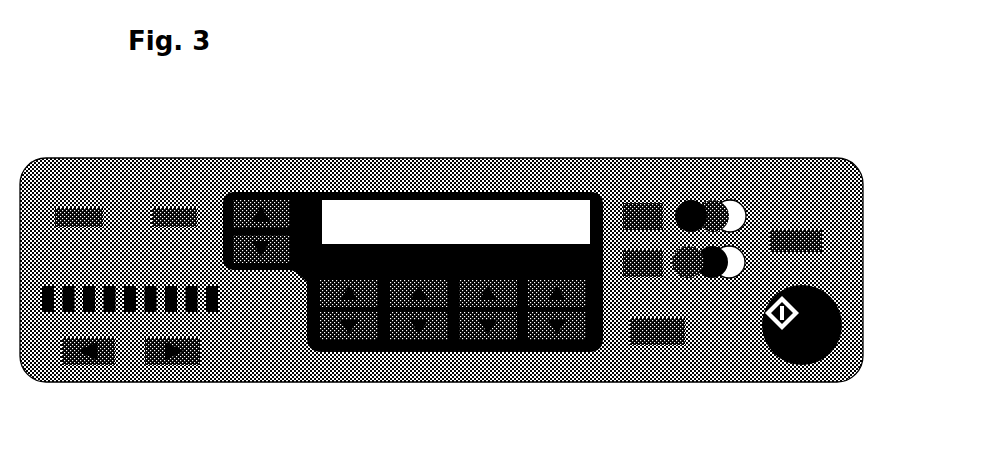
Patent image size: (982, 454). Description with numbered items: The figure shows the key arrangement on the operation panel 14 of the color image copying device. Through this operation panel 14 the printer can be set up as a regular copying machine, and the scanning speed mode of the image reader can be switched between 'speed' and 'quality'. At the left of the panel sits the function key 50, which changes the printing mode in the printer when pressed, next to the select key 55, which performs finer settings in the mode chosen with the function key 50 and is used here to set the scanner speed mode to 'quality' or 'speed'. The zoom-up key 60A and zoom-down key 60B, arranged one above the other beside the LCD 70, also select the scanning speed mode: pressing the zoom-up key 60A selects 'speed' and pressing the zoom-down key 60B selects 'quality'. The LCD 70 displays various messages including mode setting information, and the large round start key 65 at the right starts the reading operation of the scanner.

The operation panel 14 is at (605, 152).
The function key 50 is at (56, 213).
The select key 55 is at (152, 213).
The zoom-up key 60A is at (272, 195).
The zoom-down key 60B is at (228, 248).
The LCD 70 is at (442, 211).
The start key 65 is at (800, 365).